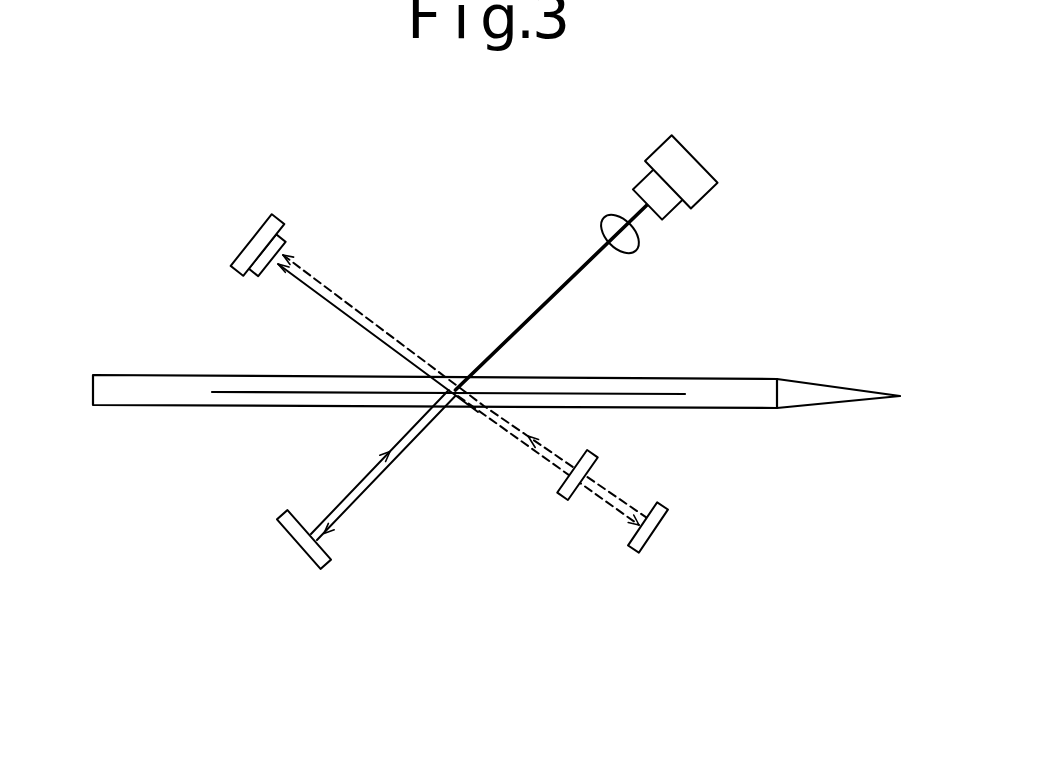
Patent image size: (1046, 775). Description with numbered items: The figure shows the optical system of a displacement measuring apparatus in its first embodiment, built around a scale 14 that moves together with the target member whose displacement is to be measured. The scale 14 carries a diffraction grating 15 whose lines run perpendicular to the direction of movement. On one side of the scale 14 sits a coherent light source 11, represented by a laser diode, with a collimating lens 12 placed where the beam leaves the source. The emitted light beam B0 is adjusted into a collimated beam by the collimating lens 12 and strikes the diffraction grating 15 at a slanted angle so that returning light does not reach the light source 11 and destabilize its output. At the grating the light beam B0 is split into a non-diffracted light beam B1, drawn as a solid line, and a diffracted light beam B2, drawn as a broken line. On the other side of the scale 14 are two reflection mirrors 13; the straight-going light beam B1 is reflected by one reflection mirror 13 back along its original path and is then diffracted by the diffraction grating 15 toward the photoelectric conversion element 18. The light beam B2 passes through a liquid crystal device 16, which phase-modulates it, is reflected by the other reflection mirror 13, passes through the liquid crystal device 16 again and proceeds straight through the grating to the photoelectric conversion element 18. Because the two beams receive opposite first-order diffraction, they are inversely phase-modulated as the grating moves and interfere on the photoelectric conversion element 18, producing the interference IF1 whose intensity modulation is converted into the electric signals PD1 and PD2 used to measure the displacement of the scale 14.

The coherent light source 11 is at (698, 154).
The collimating lens 12 is at (612, 213).
The reflection mirror 13 is at (297, 540).
The scale 14 is at (738, 409).
The diffraction grating 15 is at (637, 387).
The liquid crystal device 16 is at (561, 501).
The photoelectric conversion element 18 is at (277, 213).
The light beam B0 is at (538, 309).
The non-diffracted light beam B1 is at (357, 480).
The diffracted light beam B2 is at (502, 428).
The interference light IF1 is at (371, 300).
The signal PD1 is at (260, 230).
The signal PD2 is at (240, 256).